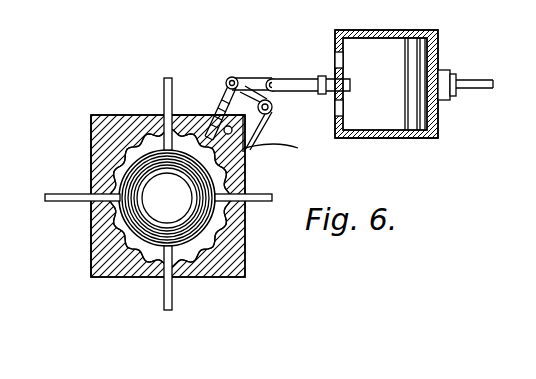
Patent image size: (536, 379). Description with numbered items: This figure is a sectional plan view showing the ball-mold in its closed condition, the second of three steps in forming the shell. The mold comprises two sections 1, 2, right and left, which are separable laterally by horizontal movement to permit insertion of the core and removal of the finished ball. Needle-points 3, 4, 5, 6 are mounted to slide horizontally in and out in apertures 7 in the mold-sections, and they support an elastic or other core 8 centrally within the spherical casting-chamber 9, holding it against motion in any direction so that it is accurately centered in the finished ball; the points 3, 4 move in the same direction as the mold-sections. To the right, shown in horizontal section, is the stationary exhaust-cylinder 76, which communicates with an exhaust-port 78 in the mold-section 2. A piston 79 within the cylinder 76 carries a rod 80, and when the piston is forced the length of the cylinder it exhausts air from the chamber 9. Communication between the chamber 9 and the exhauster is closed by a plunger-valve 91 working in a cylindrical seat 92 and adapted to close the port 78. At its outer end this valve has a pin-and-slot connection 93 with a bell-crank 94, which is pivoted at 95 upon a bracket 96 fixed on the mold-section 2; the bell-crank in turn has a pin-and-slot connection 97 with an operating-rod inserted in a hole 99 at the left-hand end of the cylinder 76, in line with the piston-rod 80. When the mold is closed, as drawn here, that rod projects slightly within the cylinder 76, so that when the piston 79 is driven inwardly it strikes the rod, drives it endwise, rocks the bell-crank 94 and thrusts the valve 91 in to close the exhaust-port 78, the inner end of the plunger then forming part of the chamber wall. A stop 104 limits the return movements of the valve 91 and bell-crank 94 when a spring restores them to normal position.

The mold-section 1 is at (119, 115).
The mold-section 2 is at (197, 116).
The needle-point 3 is at (66, 202).
The needle-point 4 is at (260, 203).
The needle-point 5 is at (173, 294).
The needle-point 6 is at (173, 104).
The aperture 7 is at (158, 114).
The core 8 is at (167, 198).
The casting-chamber 9 is at (169, 198).
The exhaust-cylinder 76 is at (383, 139).
The exhaust-port 78 is at (262, 142).
The piston 79 is at (417, 118).
The rod 80 is at (471, 80).
The plunger-valve 91 is at (226, 84).
The cylindrical seat 92 is at (215, 134).
The pin-and-slot connection 93 is at (311, 75).
The bell-crank 94 is at (267, 84).
The pivot 95 is at (237, 74).
The bracket 96 is at (258, 125).
The pin-and-slot connection 97 is at (291, 79).
The hole 99 is at (320, 94).
The stop 104 is at (287, 151).